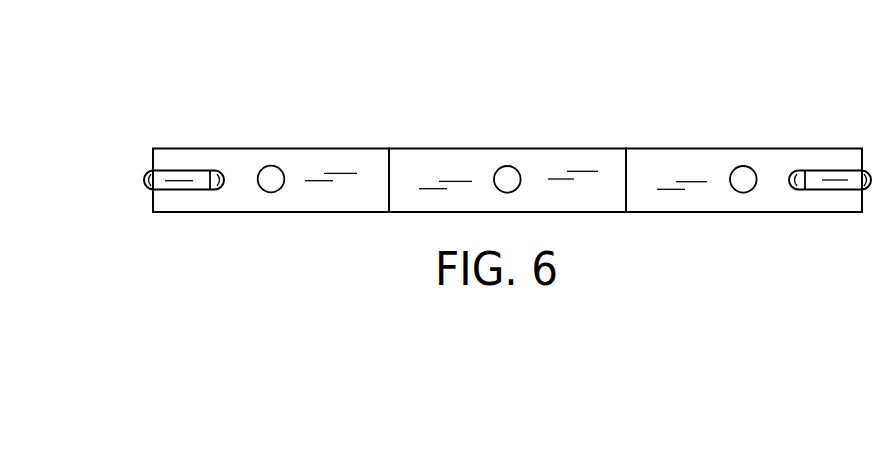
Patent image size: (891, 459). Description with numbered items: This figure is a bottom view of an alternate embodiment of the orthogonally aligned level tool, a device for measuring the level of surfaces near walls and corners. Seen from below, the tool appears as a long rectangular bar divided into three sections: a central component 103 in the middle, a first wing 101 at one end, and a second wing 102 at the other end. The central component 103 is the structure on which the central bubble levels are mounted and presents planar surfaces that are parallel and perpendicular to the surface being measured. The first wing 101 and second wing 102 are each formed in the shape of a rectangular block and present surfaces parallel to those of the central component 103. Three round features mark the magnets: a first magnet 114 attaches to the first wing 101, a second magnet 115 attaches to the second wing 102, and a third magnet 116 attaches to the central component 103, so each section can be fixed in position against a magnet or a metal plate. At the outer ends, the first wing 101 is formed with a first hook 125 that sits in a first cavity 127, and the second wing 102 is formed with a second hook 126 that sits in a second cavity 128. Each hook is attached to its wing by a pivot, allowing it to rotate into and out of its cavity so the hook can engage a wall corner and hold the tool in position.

The first wing 101 is at (310, 163).
The second wing 102 is at (690, 167).
The central component 103 is at (432, 160).
The first magnet 114 is at (268, 183).
The second magnet 115 is at (744, 174).
The third magnet 116 is at (507, 178).
The first hook 125 is at (185, 178).
The second hook 126 is at (793, 175).
The first cavity 127 is at (217, 187).
The second cavity 128 is at (838, 180).